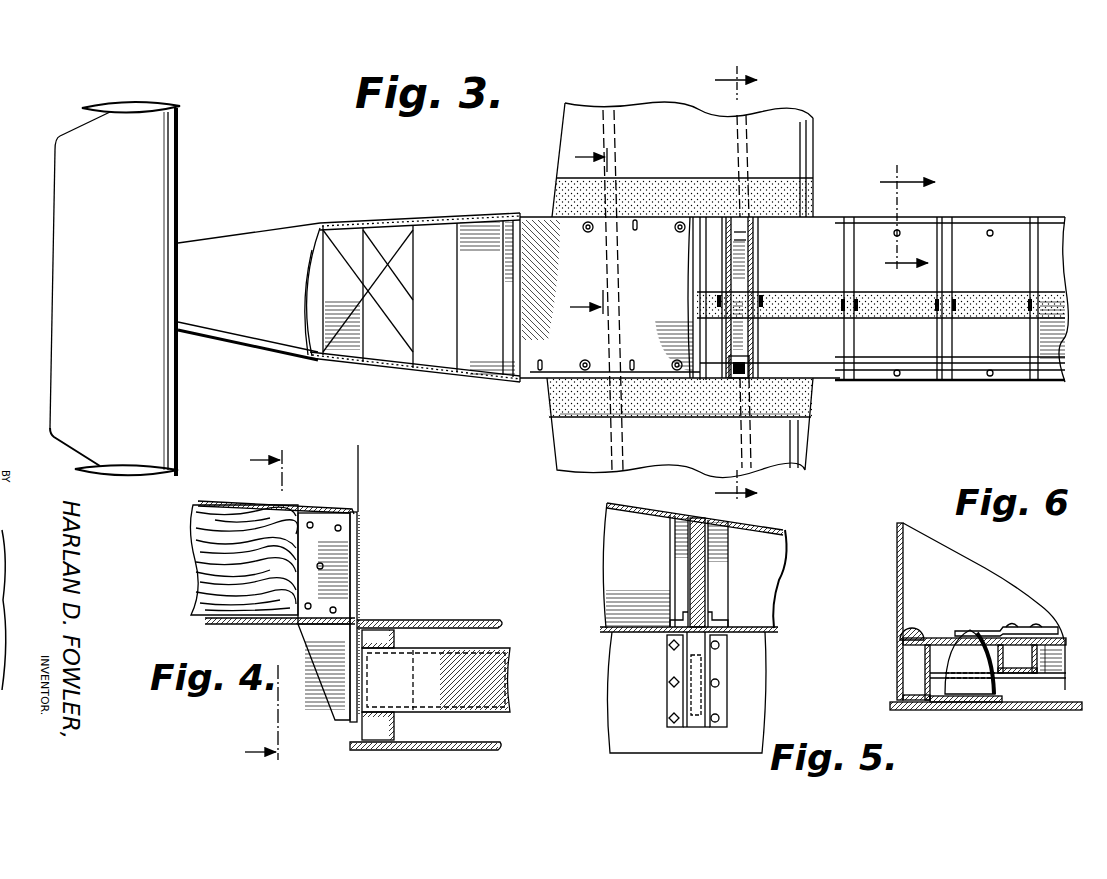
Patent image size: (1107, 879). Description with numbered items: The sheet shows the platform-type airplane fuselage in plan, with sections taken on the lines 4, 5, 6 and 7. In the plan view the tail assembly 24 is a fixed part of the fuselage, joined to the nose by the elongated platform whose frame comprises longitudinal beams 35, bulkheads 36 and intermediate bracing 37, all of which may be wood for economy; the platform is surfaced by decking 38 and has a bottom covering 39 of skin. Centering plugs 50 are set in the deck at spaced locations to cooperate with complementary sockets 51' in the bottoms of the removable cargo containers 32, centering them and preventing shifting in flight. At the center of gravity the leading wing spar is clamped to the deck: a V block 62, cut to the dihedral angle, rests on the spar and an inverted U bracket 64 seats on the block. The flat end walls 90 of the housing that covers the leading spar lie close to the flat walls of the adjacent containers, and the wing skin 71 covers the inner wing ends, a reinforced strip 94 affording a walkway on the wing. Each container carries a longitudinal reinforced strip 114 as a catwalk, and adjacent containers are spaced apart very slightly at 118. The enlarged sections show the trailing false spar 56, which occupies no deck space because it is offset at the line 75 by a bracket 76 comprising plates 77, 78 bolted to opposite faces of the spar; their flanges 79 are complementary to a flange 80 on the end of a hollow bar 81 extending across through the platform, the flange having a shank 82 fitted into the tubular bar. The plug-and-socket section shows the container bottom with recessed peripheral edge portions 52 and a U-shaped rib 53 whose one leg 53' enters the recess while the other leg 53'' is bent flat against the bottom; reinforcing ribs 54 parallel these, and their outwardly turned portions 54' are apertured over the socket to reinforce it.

In FIG. 3, the tail assembly 24 is at (217, 250).
In FIG. 3, the longitudinal beams 35 is at (452, 222).
In FIG. 4, the longitudinal beams 35 is at (396, 729).
In FIG. 3, the bulkheads 36 is at (457, 262).
In FIG. 3, the intermediate bracing 37 is at (368, 315).
In FIG. 3, the decking 38 is at (517, 376).
In FIG. 4, the decking 38 is at (450, 620).
In FIG. 3, the centering plugs 50 is at (686, 231).
In FIG. 6, the centering plugs 50 is at (965, 700).
In FIG. 3, the V block 62 is at (745, 272).
In FIG. 3, the inverted U bracket 64 is at (748, 237).
In FIG. 3, the end walls 90 is at (753, 333).
In FIG. 3, the reinforced strip 94 is at (668, 412).
In FIG. 3, the skin 71 is at (565, 450).
In FIG. 4, the skin 71 is at (218, 500).
In FIG. 5, the skin 71 is at (672, 510).
In FIG. 3, the cargo containers 32 is at (905, 385).
In FIG. 6, the cargo containers 32 is at (897, 590).
In FIG. 3, the longitudinal reinforced strip 114 is at (993, 312).
In FIG. 3, the space between containers 118 is at (943, 257).
In FIG. 4, the trailing false spar 56 is at (188, 540).
In FIG. 5, the trailing false spar 56 is at (700, 557).
In FIG. 4, the offset line 75 is at (360, 495).
In FIG. 4, the bracket 76 is at (357, 575).
In FIG. 4, the flange 80 is at (355, 695).
In FIG. 4, the bar 81 is at (500, 688).
In FIG. 4, the shank 82 is at (357, 660).
In FIG. 4, the bottom covering 39 is at (428, 752).
In FIG. 5, the plate 77 is at (685, 660).
In FIG. 5, the plate 78 is at (705, 665).
In FIG. 5, the flanges 79 is at (668, 705).
In FIG. 6, the recessed peripheral edge portions 52 is at (905, 640).
In FIG. 6, the U-shaped rib 53 is at (986, 715).
In FIG. 6, the leg 53' is at (891, 672).
In FIG. 6, the leg 53'' is at (955, 665).
In FIG. 6, the socket 51' is at (965, 647).
In FIG. 6, the reinforcing ribs 54 is at (1006, 678).
In FIG. 6, the outwardly turned portions 54' is at (997, 627).
In FIG. 3, the section line 4— 4 is at (588, 235).
In FIG. 4, the section line 5— 5 is at (263, 611).
In FIG. 3, the section line 6— 6 is at (910, 225).
In FIG. 3, the section line 7— 7 is at (744, 284).